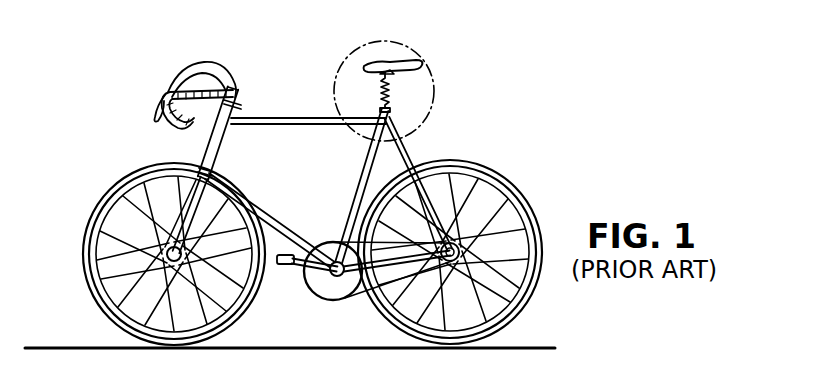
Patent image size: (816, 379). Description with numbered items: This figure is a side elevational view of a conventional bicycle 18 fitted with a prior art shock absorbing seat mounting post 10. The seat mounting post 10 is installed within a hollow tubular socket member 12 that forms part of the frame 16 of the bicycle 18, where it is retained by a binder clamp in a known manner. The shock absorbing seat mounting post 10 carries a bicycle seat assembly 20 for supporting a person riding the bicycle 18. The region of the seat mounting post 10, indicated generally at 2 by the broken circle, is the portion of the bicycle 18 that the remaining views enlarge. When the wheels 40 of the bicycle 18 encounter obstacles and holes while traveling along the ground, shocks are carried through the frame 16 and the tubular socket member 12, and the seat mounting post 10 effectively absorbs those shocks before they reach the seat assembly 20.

The seat assembly region 2 is at (432, 62).
The shock absorbing bicycle seat mounting post 10 is at (368, 88).
The hollow tubular socket member 12 is at (336, 125).
The frame 16 is at (305, 117).
The bicycle 18 is at (238, 86).
The bicycle seat assembly 20 is at (387, 63).
The wheels 40 is at (82, 254).